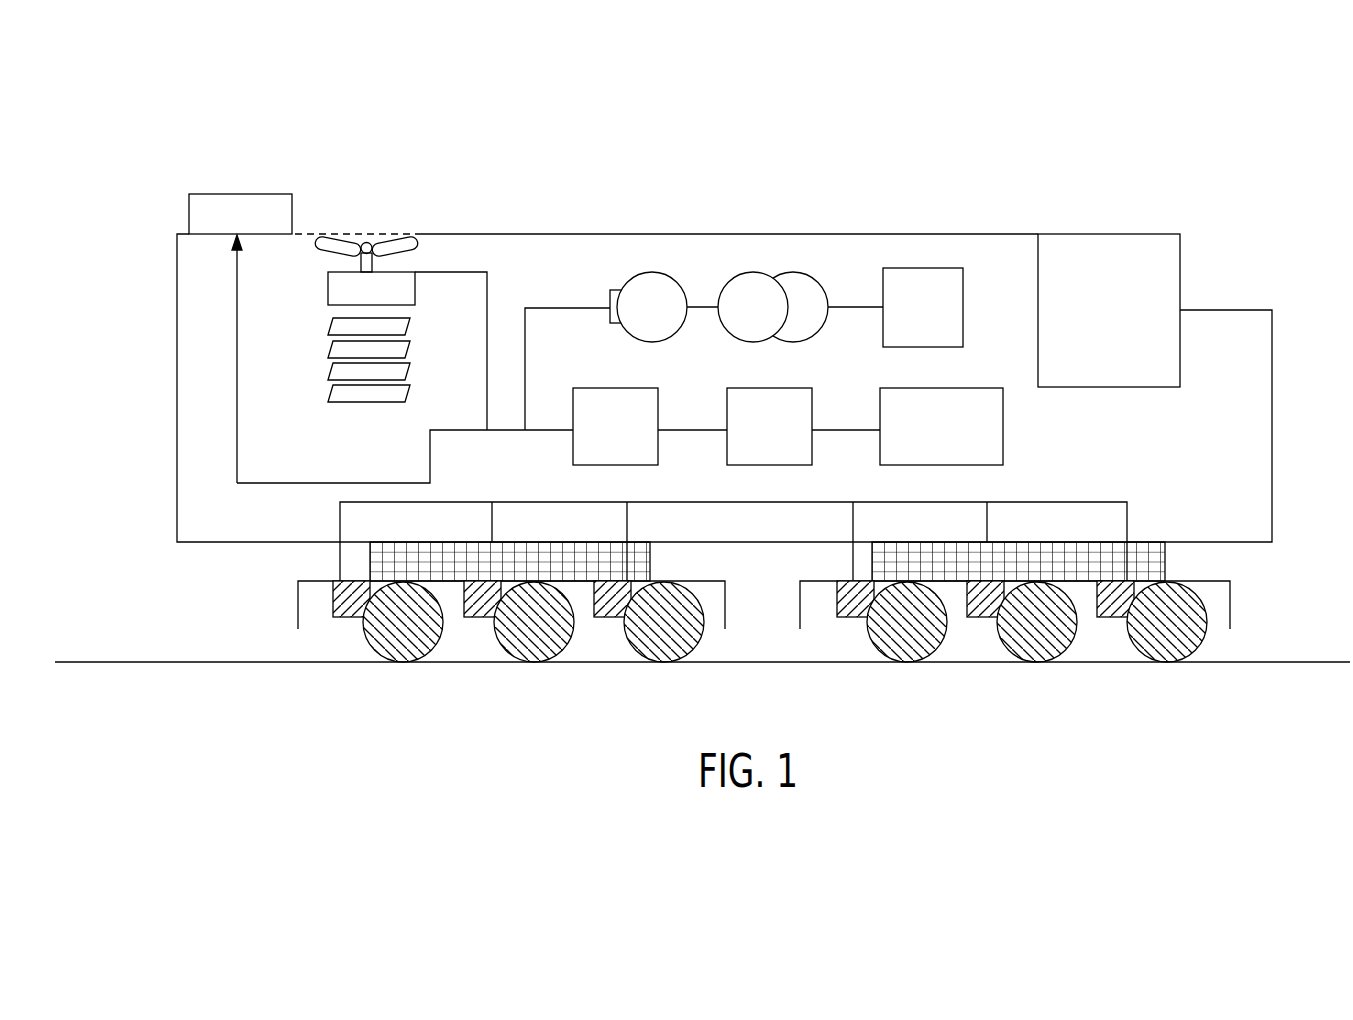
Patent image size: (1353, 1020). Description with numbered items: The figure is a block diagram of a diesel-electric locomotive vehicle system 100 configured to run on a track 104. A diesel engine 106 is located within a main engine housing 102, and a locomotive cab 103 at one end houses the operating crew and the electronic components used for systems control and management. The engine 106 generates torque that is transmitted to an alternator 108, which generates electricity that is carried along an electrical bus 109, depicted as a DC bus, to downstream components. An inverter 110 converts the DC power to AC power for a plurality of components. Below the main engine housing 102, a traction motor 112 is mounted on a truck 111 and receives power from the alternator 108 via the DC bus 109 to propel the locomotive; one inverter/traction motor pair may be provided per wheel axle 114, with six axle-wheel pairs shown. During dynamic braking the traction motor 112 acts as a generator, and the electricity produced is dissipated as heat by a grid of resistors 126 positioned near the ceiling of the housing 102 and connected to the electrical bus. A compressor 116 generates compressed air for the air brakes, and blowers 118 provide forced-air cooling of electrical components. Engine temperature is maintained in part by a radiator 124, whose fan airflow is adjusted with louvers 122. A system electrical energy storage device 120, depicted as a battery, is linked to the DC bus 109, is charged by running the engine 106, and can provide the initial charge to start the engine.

The locomotive vehicle system 100 is at (160, 126).
The main engine housing 102 is at (1017, 233).
The locomotive cab 103 is at (1110, 242).
The track 104 is at (1282, 662).
The diesel engine 106 is at (990, 388).
The alternator 108 is at (805, 388).
The electrical bus 109 is at (672, 428).
The inverter 110 is at (595, 388).
The truck 111 is at (652, 570).
The traction motor 112 is at (347, 617).
The wheel axle 114 is at (427, 657).
The compressor 116 is at (681, 289).
The blowers 118 is at (748, 272).
The system electrical energy storage device 120 is at (932, 268).
The louvers 122 is at (423, 317).
The radiator 124 is at (380, 233).
The grid of resistors 126 is at (243, 193).